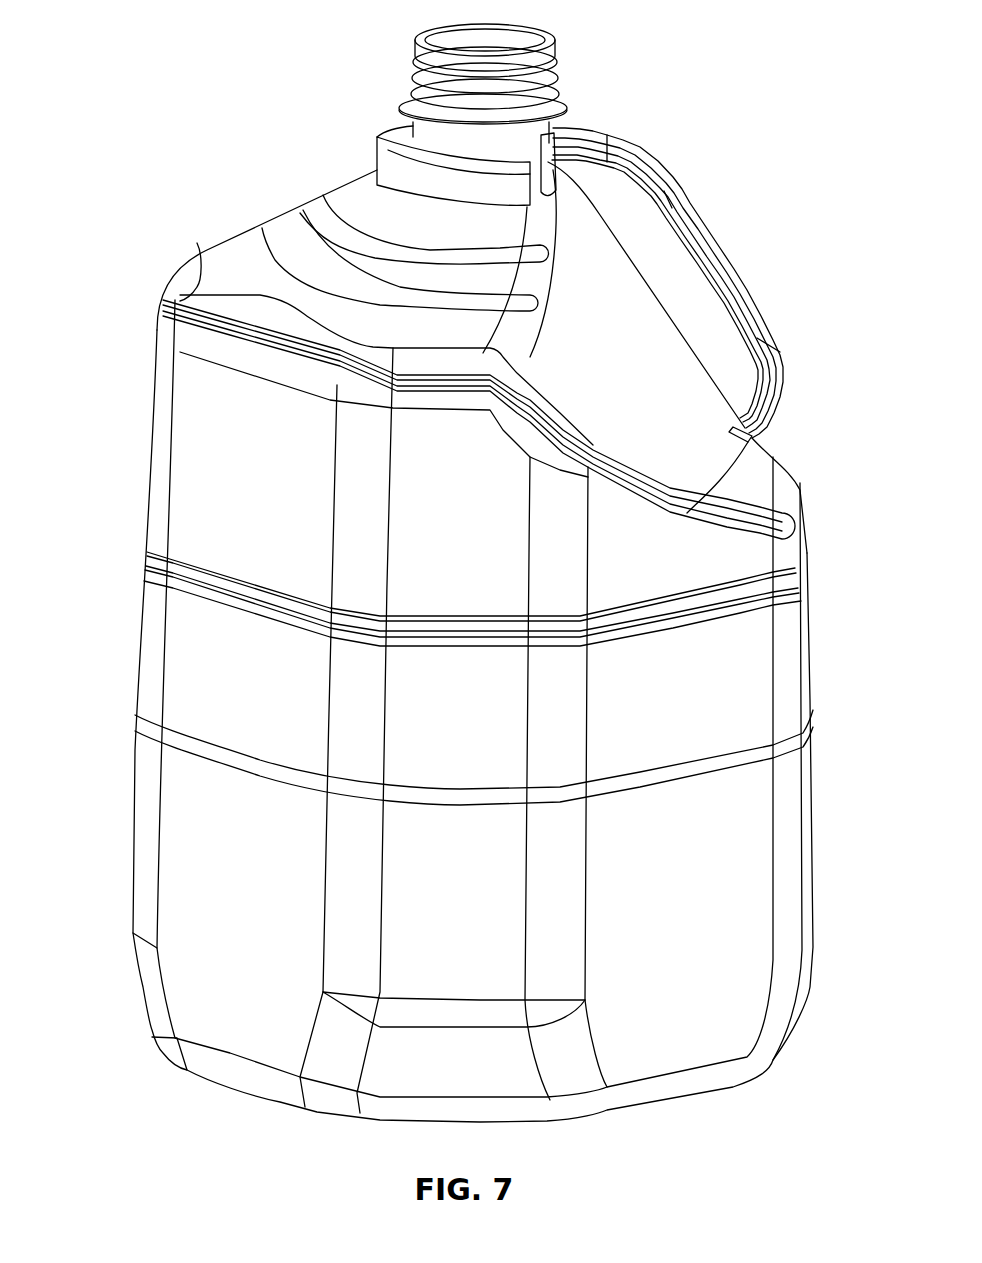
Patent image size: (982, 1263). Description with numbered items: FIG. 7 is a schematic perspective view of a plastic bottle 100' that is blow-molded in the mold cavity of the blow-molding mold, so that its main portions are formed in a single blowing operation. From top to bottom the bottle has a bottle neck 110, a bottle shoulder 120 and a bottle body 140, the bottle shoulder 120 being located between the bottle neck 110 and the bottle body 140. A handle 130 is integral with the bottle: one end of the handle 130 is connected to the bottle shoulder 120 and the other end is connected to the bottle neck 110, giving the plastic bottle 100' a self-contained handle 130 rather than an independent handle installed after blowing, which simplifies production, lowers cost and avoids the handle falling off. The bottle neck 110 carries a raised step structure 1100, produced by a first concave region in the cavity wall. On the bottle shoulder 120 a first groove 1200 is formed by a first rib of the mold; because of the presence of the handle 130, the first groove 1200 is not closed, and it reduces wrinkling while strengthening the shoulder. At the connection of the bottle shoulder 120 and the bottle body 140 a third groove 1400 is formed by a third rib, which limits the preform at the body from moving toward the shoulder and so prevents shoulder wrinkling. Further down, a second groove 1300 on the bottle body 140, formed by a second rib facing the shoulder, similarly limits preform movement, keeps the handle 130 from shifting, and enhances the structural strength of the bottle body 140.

The plastic bottle 100' is at (473, 588).
The raised step structure 1100 is at (395, 150).
The first groove 1200 is at (318, 195).
The bottle shoulder 120 is at (200, 246).
The third groove 1400 is at (160, 300).
The second groove 1300 is at (148, 552).
The bottle neck 110 is at (565, 165).
The handle 130 is at (748, 290).
The bottle body 140 is at (783, 688).